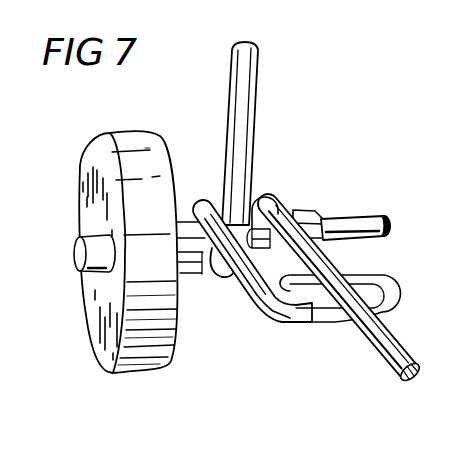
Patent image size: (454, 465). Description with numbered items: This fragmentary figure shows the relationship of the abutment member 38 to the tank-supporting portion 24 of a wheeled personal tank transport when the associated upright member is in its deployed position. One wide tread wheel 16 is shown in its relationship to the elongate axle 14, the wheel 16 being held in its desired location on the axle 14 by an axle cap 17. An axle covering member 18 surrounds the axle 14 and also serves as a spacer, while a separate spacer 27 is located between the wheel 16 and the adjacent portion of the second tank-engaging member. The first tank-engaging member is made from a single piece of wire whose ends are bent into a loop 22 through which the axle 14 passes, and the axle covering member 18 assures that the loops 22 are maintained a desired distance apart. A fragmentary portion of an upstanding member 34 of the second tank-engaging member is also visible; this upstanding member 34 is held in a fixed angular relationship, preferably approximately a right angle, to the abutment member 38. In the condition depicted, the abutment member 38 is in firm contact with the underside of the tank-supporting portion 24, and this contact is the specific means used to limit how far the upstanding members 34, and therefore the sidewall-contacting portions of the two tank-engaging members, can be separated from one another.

The axle 14 is at (270, 195).
The wide tread wheel 16 is at (112, 371).
The axle cap 17 is at (79, 260).
The axle covering member 18 is at (303, 210).
The loop 22 is at (313, 261).
The tank-supporting portion 24 is at (399, 373).
The spacer 27 is at (217, 268).
The upstanding member 34 is at (252, 71).
The abutment member 38 is at (308, 318).